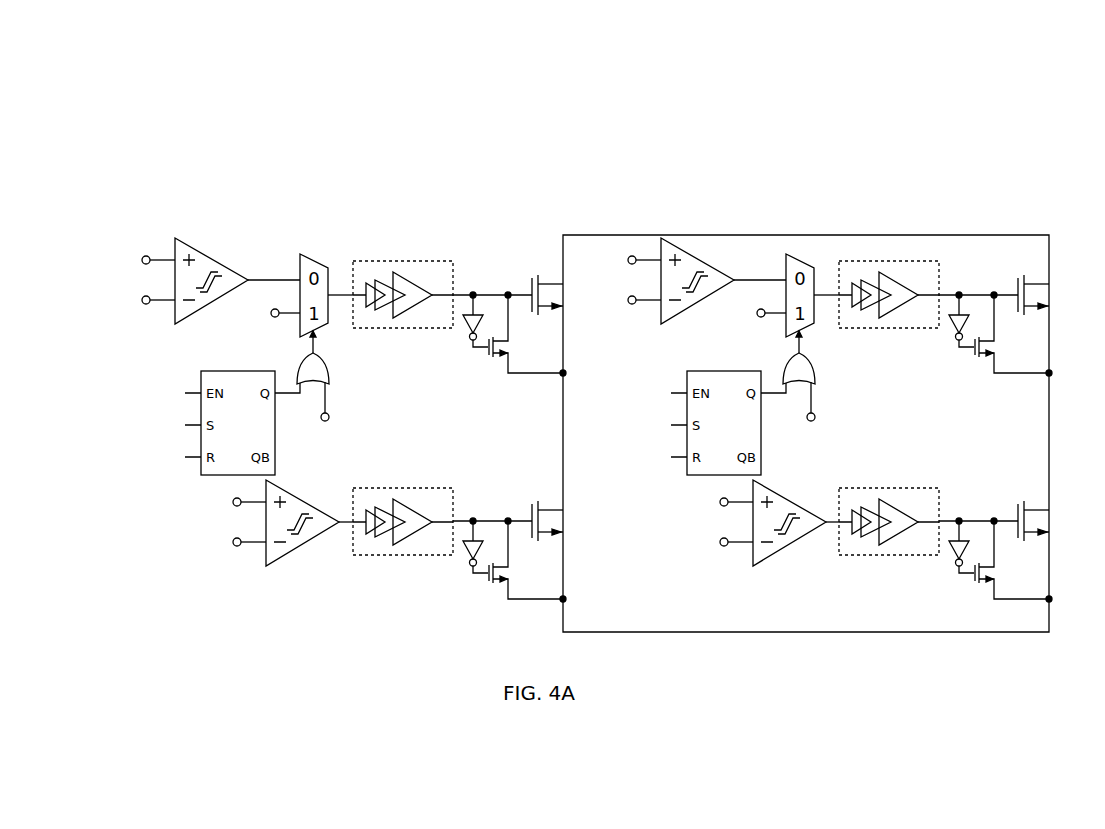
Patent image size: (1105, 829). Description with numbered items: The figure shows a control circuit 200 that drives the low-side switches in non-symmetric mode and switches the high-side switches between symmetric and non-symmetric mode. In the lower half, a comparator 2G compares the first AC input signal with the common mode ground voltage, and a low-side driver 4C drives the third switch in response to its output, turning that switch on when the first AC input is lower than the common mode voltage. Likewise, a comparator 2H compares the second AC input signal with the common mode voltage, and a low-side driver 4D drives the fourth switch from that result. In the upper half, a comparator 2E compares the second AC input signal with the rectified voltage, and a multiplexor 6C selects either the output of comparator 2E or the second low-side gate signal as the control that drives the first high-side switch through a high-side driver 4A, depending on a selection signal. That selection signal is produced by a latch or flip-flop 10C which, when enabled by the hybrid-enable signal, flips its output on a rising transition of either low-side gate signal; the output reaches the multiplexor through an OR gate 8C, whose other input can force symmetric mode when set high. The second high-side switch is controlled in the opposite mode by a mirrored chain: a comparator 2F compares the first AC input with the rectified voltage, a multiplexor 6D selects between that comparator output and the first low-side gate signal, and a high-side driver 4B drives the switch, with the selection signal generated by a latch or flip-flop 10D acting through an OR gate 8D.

The control circuit 200 is at (131, 129).
The comparator 2E is at (190, 242).
The comparator 2F is at (683, 247).
The comparator 2G is at (272, 565).
The comparator 2H is at (763, 562).
The high-side driver 4A is at (432, 258).
The high-side driver 4B is at (886, 260).
The low-side driver 4C is at (428, 487).
The low-side driver 4D is at (885, 487).
The multiplexor 6C is at (320, 262).
The multiplexor 6D is at (783, 272).
The OR gate 8C is at (328, 373).
The OR gate 8D is at (814, 373).
The latch or flip-flop 10C is at (202, 383).
The latch or flip-flop 10D is at (687, 373).